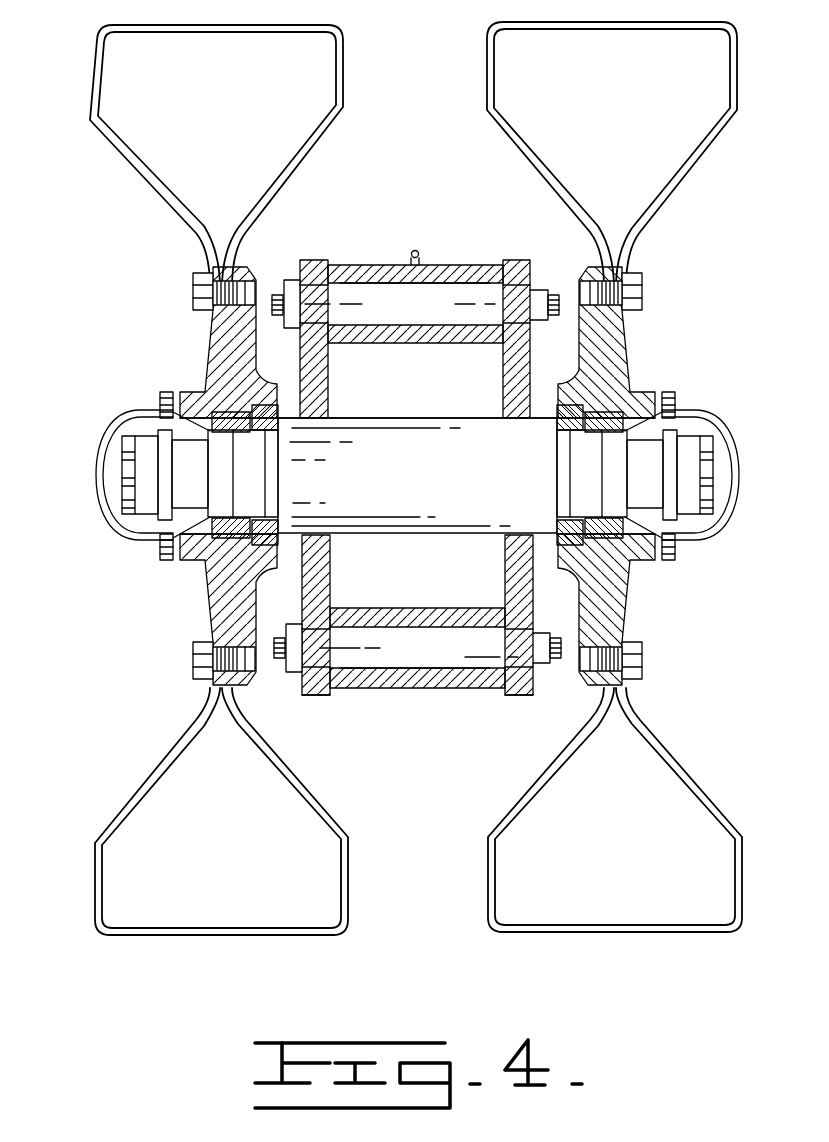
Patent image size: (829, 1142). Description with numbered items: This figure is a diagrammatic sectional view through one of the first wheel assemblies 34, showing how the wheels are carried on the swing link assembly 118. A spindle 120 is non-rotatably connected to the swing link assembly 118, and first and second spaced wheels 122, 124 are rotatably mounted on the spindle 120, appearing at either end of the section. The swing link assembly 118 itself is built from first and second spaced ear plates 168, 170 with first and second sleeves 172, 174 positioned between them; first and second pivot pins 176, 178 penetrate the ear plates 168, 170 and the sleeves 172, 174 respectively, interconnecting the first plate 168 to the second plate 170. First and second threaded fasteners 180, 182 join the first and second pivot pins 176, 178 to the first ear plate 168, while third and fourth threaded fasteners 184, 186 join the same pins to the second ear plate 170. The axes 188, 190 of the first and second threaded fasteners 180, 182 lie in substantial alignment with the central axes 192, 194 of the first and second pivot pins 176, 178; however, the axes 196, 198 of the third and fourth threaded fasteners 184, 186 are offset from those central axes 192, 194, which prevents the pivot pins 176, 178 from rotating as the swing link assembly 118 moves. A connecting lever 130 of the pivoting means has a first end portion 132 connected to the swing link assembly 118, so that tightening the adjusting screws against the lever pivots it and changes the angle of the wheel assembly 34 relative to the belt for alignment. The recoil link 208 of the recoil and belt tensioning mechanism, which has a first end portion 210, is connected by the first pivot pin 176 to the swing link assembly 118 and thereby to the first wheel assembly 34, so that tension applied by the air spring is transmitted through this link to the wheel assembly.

The first wheel assembly 34 is at (158, 720).
The swing link assembly 118 is at (480, 440).
The spindle 120 is at (454, 474).
The first wheel 122 is at (92, 126).
The second wheel 124 is at (722, 128).
The connecting lever 130 is at (371, 612).
The first end portion 132 is at (441, 690).
The first ear plate 168 is at (326, 370).
The second ear plate 170 is at (507, 552).
The first sleeve 172 is at (386, 270).
The second sleeve 174 is at (470, 690).
The first pivot pin 176 is at (422, 315).
The second pivot pin 178 is at (444, 657).
The first threaded fastener 180 is at (257, 320).
The second threaded fastener 182 is at (214, 633).
The third threaded fastener 184 is at (565, 334).
The fourth threaded fastener 186 is at (562, 640).
The axis of first threaded fastener 188 is at (293, 276).
The axis of second threaded fastener 190 is at (280, 674).
The central axis of first pivot pin 192 is at (357, 338).
The central axis of second pivot pin 194 is at (401, 601).
The axis of third threaded fastener 196 is at (560, 278).
The axis of fourth threaded fastener 198 is at (600, 700).
The recoil link 208 is at (471, 342).
The first end portion of recoil link 210 is at (481, 250).